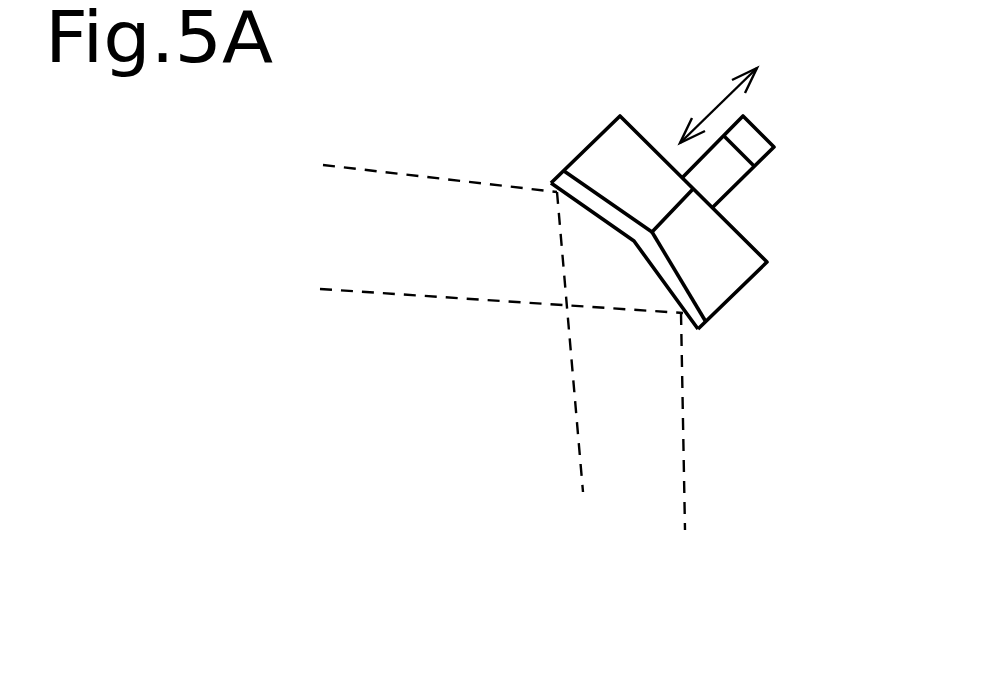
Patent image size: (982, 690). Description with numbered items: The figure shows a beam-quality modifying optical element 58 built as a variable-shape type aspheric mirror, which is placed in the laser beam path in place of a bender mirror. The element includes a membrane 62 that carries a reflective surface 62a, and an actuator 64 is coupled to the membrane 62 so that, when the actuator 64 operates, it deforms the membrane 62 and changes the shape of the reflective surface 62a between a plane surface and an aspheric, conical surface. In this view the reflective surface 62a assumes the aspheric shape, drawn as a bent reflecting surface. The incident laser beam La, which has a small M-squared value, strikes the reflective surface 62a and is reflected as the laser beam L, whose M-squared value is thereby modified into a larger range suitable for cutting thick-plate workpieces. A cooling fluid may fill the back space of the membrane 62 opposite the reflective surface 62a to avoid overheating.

The beam-quality modifying optical element 58 is at (586, 120).
The membrane 62 is at (703, 328).
The reflective surface 62a is at (626, 237).
The actuator 64 is at (763, 157).
The reflected laser beam L is at (686, 447).
The incident laser beam La is at (380, 295).